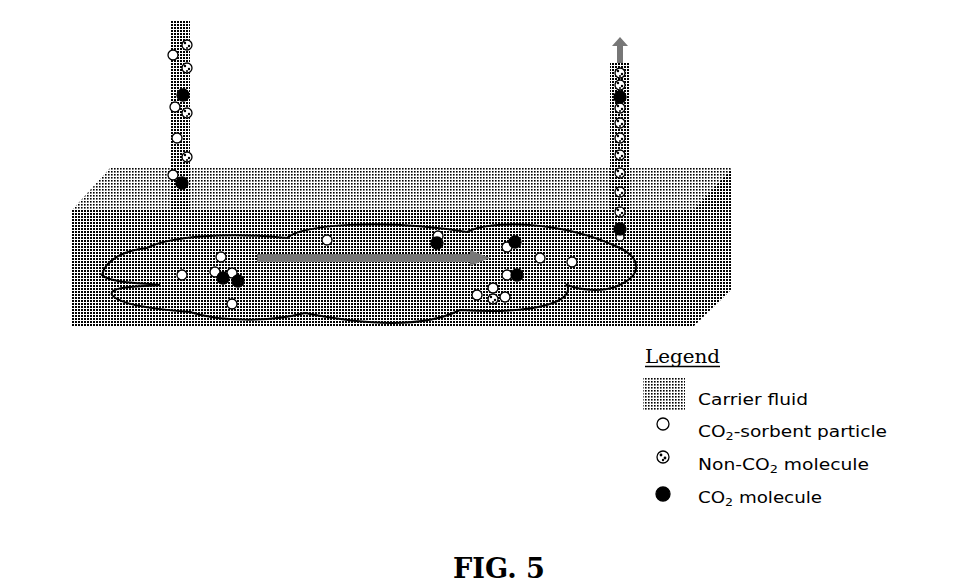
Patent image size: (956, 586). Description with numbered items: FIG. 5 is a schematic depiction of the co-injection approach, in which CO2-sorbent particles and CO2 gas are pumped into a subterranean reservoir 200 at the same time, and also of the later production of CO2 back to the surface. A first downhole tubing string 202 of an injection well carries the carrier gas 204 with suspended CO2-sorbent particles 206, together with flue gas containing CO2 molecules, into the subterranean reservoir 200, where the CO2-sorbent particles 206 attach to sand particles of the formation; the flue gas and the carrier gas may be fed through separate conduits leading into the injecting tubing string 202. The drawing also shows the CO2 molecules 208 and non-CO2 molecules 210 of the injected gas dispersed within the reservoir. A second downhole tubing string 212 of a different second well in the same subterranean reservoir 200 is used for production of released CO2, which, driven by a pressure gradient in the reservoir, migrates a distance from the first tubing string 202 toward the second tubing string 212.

The subterranean reservoir 200 is at (72, 223).
The downhole tubing string 202 is at (170, 82).
The carrier gas 204 is at (140, 265).
The CO2-sorbent particles 206 is at (237, 308).
The CO2 molecule 208 is at (221, 283).
The non-CO2 molecule 210 is at (191, 157).
The second downhole tubing string 212 is at (610, 83).